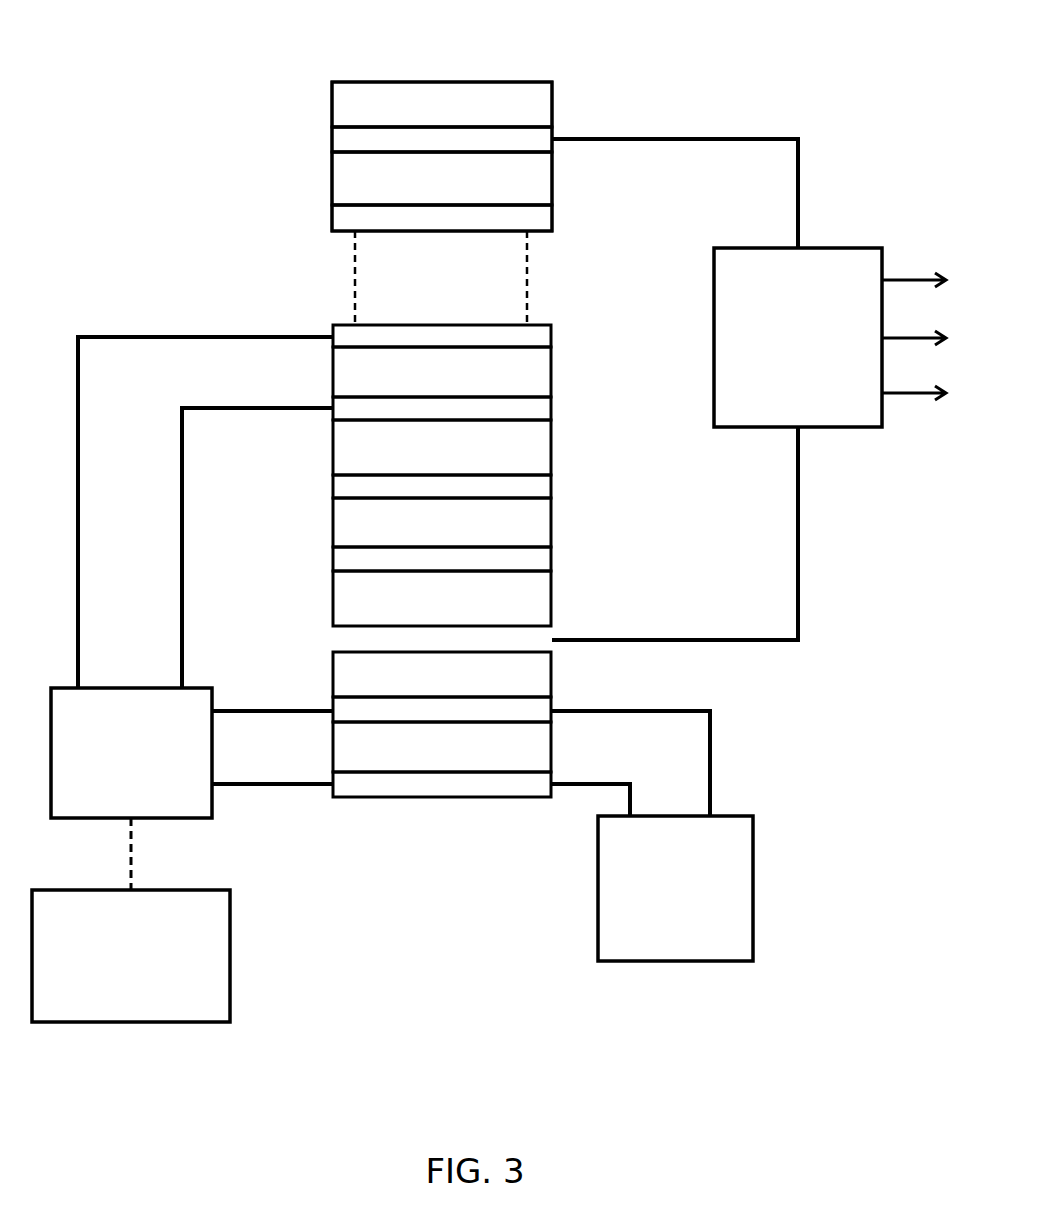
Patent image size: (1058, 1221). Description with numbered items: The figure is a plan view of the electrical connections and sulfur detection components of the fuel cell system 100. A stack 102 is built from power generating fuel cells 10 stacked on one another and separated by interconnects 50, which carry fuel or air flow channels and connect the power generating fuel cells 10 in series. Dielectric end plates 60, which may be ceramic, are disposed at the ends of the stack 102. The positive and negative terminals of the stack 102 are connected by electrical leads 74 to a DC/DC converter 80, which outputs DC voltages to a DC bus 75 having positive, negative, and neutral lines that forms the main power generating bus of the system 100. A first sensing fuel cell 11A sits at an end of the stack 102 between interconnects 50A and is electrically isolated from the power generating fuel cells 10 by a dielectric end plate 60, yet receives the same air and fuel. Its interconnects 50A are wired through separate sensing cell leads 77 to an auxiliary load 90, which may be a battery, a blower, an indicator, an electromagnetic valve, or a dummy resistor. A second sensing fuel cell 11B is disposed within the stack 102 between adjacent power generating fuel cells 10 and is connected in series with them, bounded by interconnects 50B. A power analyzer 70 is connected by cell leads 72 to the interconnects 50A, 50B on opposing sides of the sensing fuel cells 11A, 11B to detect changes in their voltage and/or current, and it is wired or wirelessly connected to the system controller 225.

The stack 102 is at (307, 86).
The dielectric end plate 60 is at (424, 122).
The power generating fuel cell 10 is at (424, 196).
The second sensing fuel cell 11B is at (468, 391).
The first sensing fuel cell 11A is at (468, 762).
The interconnect 50 is at (332, 217).
The interconnect 50B is at (552, 405).
The interconnect 50A is at (435, 797).
The system 100 is at (478, 1035).
The cell lead 72 is at (199, 406).
The power analyzer 70 is at (114, 810).
The system controller 225 is at (106, 1012).
The electrical lead 74 is at (706, 143).
The DC/DC converter 80 is at (781, 391).
The DC bus 75 is at (888, 420).
The sensing cell lead 77 is at (712, 782).
The auxiliary load 90 is at (658, 946).